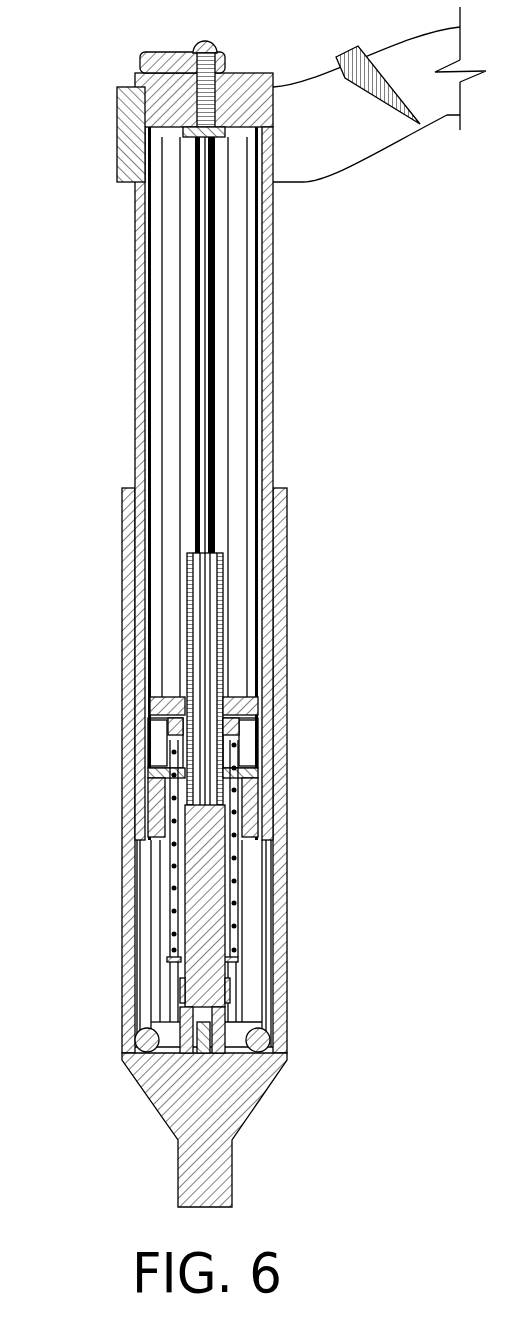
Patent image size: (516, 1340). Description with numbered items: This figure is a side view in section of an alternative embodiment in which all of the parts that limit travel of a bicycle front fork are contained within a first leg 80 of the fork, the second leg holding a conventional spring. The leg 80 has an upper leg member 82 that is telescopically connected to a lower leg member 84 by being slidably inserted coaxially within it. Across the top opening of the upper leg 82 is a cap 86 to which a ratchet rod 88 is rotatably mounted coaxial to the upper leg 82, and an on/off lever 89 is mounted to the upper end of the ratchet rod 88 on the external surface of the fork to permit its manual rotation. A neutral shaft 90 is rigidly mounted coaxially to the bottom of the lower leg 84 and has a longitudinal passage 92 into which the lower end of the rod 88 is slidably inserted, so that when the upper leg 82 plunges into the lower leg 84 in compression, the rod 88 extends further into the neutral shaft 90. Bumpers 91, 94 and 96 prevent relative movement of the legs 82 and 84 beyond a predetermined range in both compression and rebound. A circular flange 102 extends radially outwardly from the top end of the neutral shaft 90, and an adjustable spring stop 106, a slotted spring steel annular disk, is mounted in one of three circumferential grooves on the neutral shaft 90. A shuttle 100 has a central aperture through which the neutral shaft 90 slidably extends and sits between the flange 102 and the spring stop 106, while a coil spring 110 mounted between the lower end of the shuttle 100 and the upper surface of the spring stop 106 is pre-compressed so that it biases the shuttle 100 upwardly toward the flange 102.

The leg 80 is at (92, 339).
The upper leg member 82 is at (273, 232).
The lower leg member 84 is at (287, 515).
The cap 86 is at (117, 117).
The ratchet rod 88 is at (207, 337).
The on/off lever 89 is at (140, 62).
The neutral shaft 90 is at (167, 928).
The bumper 91 is at (267, 1040).
The longitudinal passage 92 is at (215, 935).
The bumper 94 is at (287, 757).
The bumper 96 is at (287, 695).
The shuttle 100 is at (182, 743).
The circular flange 102 is at (163, 695).
The adjustable spring stop 106 is at (227, 958).
The coil spring 110 is at (230, 873).